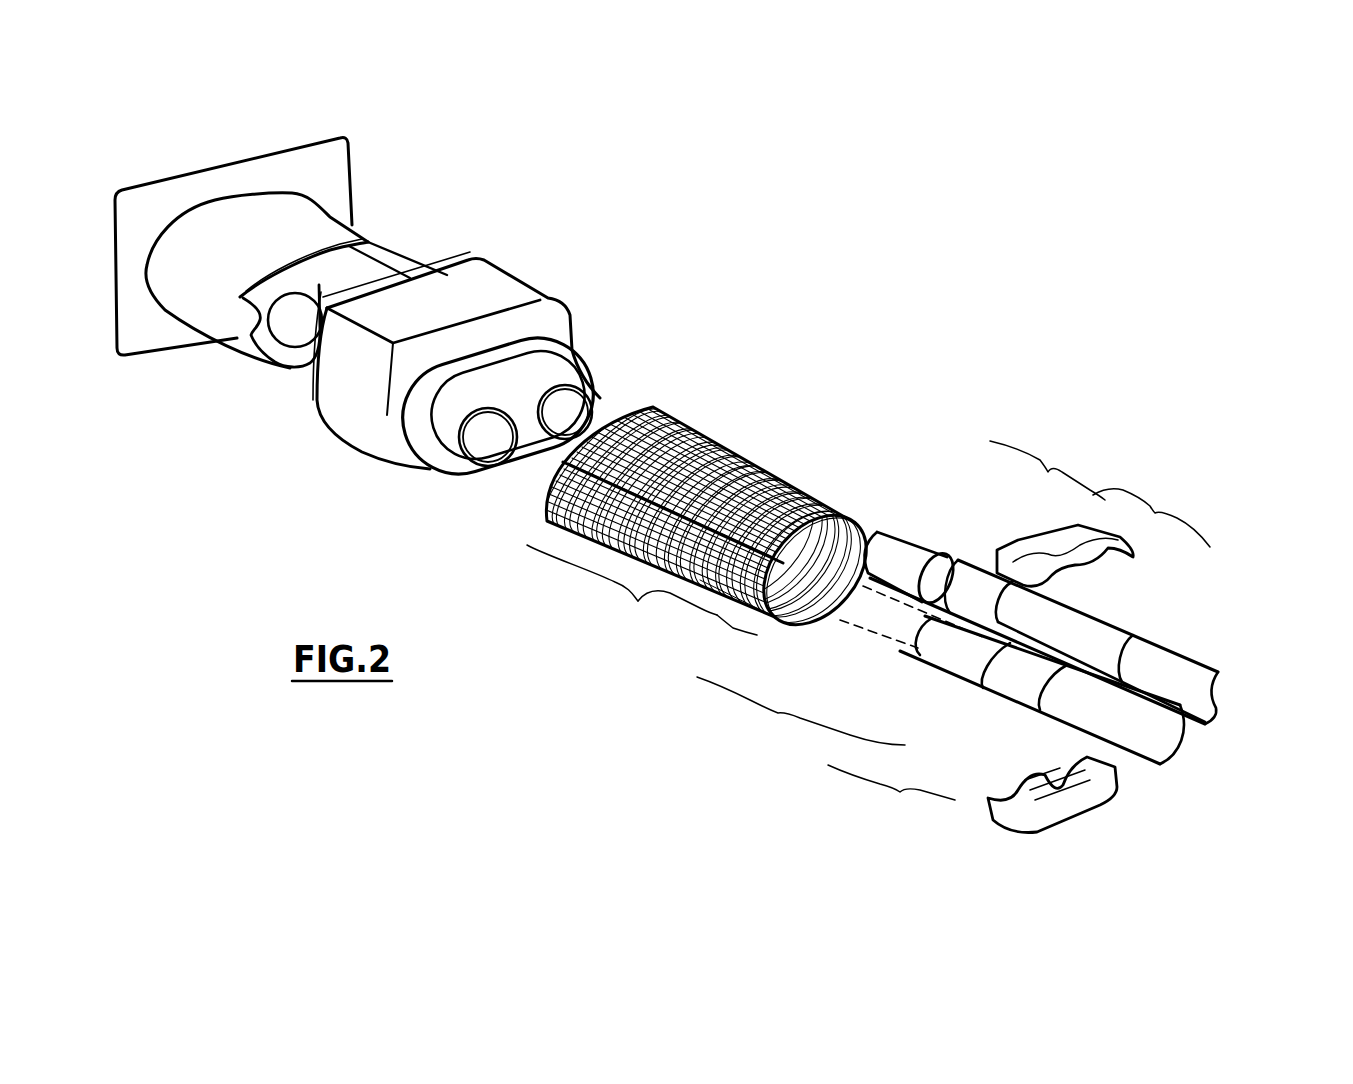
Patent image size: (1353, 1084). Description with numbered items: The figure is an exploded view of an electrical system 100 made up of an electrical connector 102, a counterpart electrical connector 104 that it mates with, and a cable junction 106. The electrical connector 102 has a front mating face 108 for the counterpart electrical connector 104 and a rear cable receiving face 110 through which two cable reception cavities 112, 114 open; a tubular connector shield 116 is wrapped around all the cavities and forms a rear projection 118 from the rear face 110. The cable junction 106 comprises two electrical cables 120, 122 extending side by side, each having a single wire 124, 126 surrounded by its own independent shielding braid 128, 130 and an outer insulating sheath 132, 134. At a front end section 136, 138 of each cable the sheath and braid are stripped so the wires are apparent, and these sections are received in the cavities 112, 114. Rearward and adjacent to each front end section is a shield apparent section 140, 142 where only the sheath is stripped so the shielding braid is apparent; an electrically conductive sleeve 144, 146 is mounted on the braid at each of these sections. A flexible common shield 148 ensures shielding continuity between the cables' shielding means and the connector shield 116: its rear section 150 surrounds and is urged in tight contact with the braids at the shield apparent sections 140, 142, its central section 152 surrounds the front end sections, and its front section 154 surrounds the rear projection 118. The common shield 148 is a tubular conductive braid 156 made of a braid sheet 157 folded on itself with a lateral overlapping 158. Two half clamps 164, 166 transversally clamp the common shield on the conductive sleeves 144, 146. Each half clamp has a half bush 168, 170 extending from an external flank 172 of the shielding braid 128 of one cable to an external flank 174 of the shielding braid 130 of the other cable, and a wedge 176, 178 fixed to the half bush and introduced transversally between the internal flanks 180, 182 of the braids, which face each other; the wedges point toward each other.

The electrical system 100 is at (733, 222).
The electrical connector 102 is at (517, 277).
The counterpart electrical connector 104 is at (222, 162).
The cable junction 106 is at (955, 290).
The front mating face 108 is at (443, 263).
The rear cable receiving face 110 is at (577, 330).
The cable reception cavity 112 is at (582, 410).
The cable reception cavity 114 is at (489, 447).
The connector shield 116 is at (393, 423).
The rear projection 118 is at (420, 425).
The electrical cable 120 is at (1157, 640).
The electrical cable 122 is at (1040, 723).
The wire 124 is at (987, 587).
The wire 126 is at (913, 635).
The shielding braid 128 is at (1070, 622).
The shielding braid 130 is at (968, 666).
The outer insulating sheath 132 is at (1207, 683).
The outer insulating sheath 134 is at (1150, 750).
The front end section 136 is at (1047, 458).
The front end section 138 is at (801, 715).
The shield apparent section 140 is at (1151, 508).
The shield apparent section 142 is at (891, 785).
The electrically conductive sleeve 144 is at (893, 555).
The electrically conductive sleeve 146 is at (1002, 680).
The flexible common shield 148 is at (760, 442).
The rear section 150 is at (733, 636).
The central section 152 is at (662, 614).
The front section 154 is at (576, 573).
The tubular conductive braid 156 is at (788, 500).
The braid sheet 157 is at (807, 618).
The lateral overlapping 158 is at (670, 487).
The half clamp 164 is at (1050, 530).
The half clamp 166 is at (1067, 828).
The half bush 168 is at (1073, 530).
The half bush 170 is at (1040, 827).
The external flank 172 is at (1123, 633).
The external flank 174 is at (937, 657).
The wedge 176 is at (1077, 558).
The wedge 178 is at (1087, 790).
The internal flank 180 is at (1074, 637).
The internal flank 182 is at (960, 617).